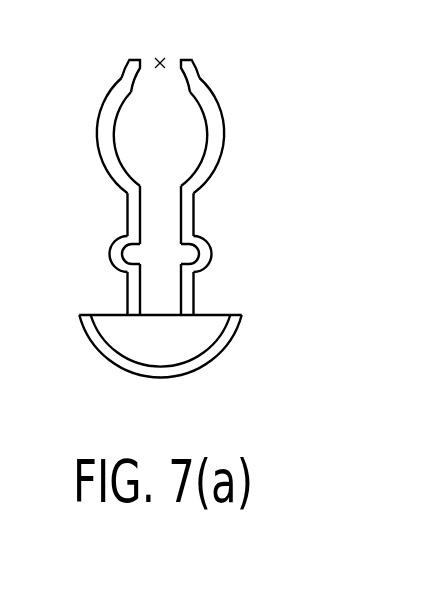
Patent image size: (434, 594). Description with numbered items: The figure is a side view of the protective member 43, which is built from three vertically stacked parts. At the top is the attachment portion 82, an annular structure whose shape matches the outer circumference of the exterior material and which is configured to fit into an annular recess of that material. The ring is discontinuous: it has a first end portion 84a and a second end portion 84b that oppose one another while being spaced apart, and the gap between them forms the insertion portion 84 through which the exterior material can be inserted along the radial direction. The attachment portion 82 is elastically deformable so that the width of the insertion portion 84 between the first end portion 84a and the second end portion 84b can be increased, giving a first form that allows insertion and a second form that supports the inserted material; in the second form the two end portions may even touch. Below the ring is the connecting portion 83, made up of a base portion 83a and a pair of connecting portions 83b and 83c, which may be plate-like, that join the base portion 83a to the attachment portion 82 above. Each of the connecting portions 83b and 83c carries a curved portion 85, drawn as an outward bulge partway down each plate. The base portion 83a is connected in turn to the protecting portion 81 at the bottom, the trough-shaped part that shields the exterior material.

The protective member 43 is at (279, 55).
The protecting portion 81 is at (212, 358).
The attachment portion 82 is at (235, 123).
The connecting portion 83 is at (257, 211).
The base portion 83a is at (212, 313).
The connecting portion 83b is at (194, 222).
The connecting portion 83c is at (127, 224).
The insertion portion 84 is at (162, 58).
The first end portion 84a is at (179, 57).
The second end portion 84b is at (142, 57).
The curved portion 85 is at (212, 254).